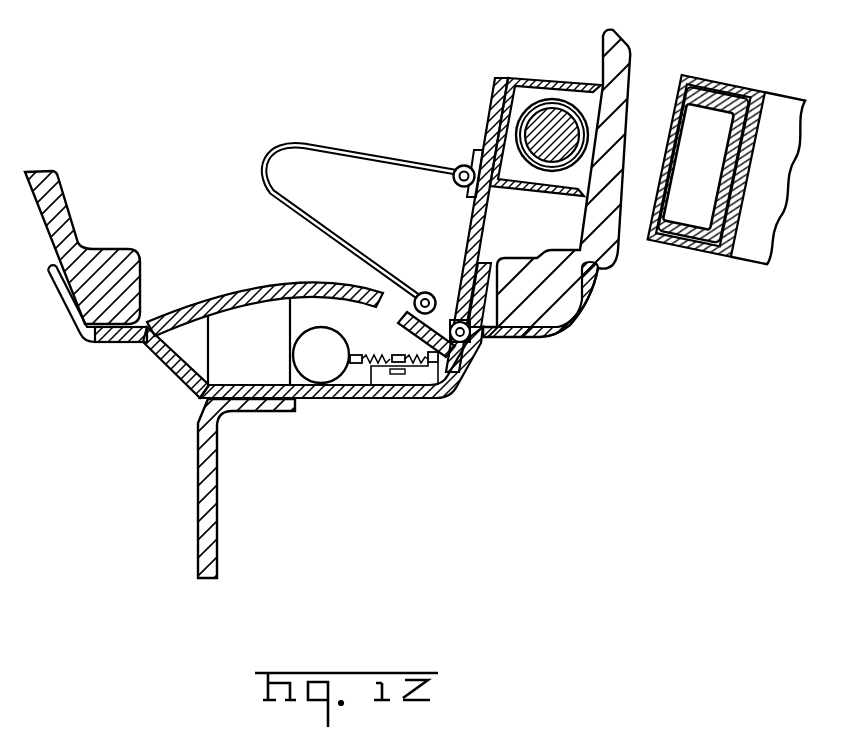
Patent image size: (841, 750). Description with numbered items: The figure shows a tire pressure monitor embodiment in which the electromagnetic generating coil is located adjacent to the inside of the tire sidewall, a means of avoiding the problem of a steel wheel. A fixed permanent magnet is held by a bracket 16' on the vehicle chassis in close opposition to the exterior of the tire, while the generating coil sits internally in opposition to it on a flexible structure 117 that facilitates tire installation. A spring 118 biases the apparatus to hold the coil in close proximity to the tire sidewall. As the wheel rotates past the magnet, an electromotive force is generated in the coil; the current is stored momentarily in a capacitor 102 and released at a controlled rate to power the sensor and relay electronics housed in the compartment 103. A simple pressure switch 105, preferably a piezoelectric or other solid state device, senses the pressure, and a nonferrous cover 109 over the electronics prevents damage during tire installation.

The capacitor 102 is at (335, 362).
The electronics compartment 103 is at (253, 351).
The pressure switch 105 is at (399, 355).
The nonferrous cover 109 is at (247, 290).
The flexible structure 117 is at (470, 238).
The spring 118 is at (353, 150).
The bracket 16' is at (770, 201).